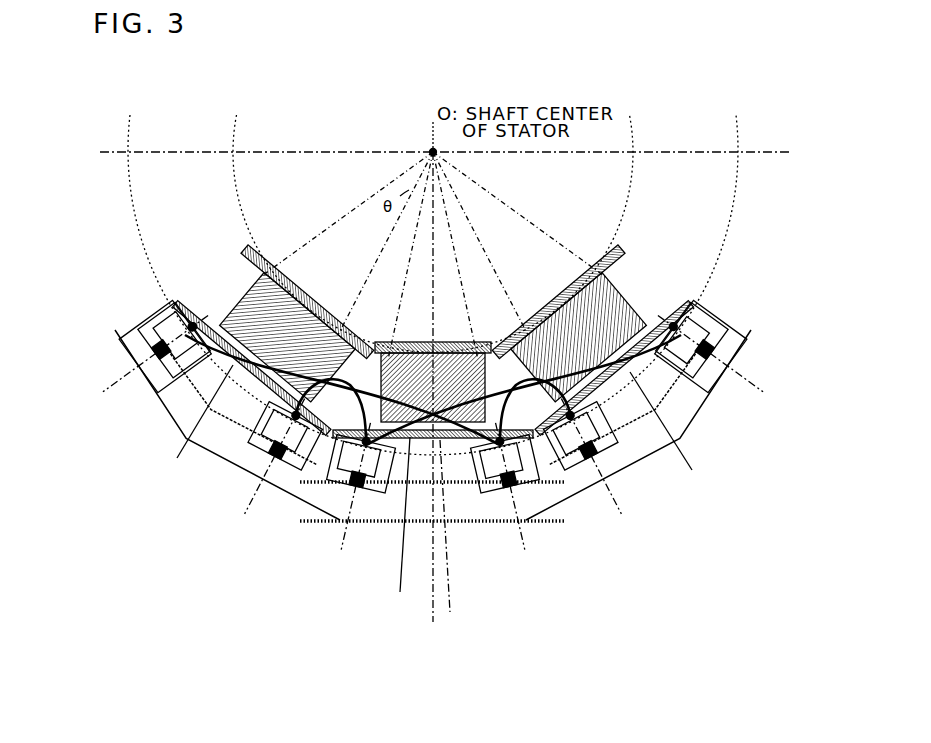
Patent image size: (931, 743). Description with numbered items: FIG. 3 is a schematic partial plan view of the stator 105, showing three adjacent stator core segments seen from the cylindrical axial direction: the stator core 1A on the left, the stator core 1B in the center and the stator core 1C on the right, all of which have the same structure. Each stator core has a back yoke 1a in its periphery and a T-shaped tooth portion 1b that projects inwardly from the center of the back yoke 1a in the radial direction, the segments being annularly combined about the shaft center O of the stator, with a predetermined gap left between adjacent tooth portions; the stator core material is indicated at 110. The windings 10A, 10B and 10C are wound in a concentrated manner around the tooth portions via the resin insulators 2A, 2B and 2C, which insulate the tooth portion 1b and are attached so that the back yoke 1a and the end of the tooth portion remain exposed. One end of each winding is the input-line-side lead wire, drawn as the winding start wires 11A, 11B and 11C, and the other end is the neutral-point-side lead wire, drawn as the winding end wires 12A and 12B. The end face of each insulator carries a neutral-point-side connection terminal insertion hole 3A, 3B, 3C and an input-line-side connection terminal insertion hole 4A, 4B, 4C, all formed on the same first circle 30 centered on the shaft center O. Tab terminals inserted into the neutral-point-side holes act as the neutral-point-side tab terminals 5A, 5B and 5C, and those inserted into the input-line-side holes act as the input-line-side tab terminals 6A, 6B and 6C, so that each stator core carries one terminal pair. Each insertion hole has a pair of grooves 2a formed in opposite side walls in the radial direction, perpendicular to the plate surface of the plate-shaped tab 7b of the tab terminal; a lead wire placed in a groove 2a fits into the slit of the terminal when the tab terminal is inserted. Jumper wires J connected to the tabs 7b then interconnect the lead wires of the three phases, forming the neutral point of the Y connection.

The first circle 30 is at (743, 162).
The stator 105 is at (748, 247).
The stator core 110 is at (571, 196).
The back yoke 1a is at (153, 360).
The tooth portion 1b is at (237, 275).
The stator core 1A is at (245, 440).
The stator core 1B is at (540, 507).
The stator core 1C is at (737, 347).
The grooves 2a is at (177, 357).
The insulator 2A is at (258, 290).
The insulator 2B is at (417, 427).
The insulator 2C is at (700, 292).
The neutral-point-side connection terminal insertion hole 3A is at (165, 388).
The neutral-point-side connection terminal insertion hole 3B is at (362, 520).
The neutral-point-side connection terminal insertion hole 3C is at (600, 470).
The input-line-side connection terminal insertion hole 4A is at (290, 497).
The input-line-side connection terminal insertion hole 4B is at (478, 527).
The input-line-side connection terminal insertion hole 4C is at (693, 373).
The neutral-point-side tab terminal 5A is at (140, 325).
The neutral-point-side tab terminal 5B is at (333, 520).
The neutral-point-side tab terminal 5C is at (583, 497).
The input-line-side tab terminal 6A is at (265, 478).
The input-line-side tab terminal 6B is at (507, 520).
The input-line-side tab terminal 6C is at (730, 318).
The tab 7b is at (160, 306).
The winding 10A is at (327, 314).
The winding 10B is at (400, 348).
The winding 10C is at (547, 313).
The winding start wire 11A is at (291, 351).
The winding start wire 11B is at (459, 387).
The winding start wire 11C is at (590, 339).
The winding end wire 12A is at (384, 339).
The winding end wire 12B is at (433, 390).
The jumper wires J is at (177, 458).